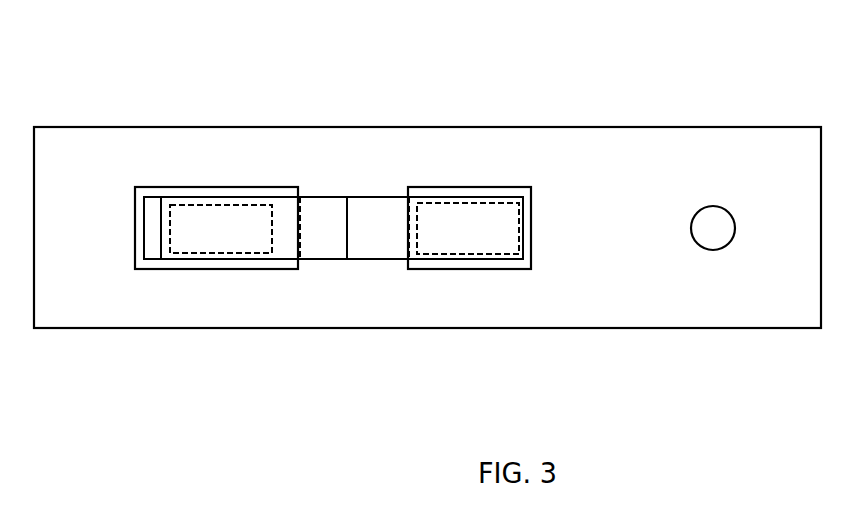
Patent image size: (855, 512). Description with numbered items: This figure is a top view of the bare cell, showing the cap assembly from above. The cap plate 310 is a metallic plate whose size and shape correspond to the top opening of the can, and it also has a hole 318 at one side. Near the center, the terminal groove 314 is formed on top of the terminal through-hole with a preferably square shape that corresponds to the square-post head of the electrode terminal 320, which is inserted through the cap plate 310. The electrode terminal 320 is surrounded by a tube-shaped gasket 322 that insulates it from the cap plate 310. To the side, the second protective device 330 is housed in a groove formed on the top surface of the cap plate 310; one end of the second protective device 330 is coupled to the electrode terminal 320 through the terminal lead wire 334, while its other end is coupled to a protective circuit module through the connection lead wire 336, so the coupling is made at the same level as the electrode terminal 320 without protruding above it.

The cap plate 310 is at (777, 148).
The terminal groove 314 is at (527, 190).
The hole 318 is at (690, 217).
The electrode terminal 320 is at (456, 202).
The tube-shaped gasket 322 is at (510, 193).
The second protective device 330 is at (250, 213).
The terminal lead wire 334 is at (399, 215).
The connection lead wire 336 is at (152, 195).